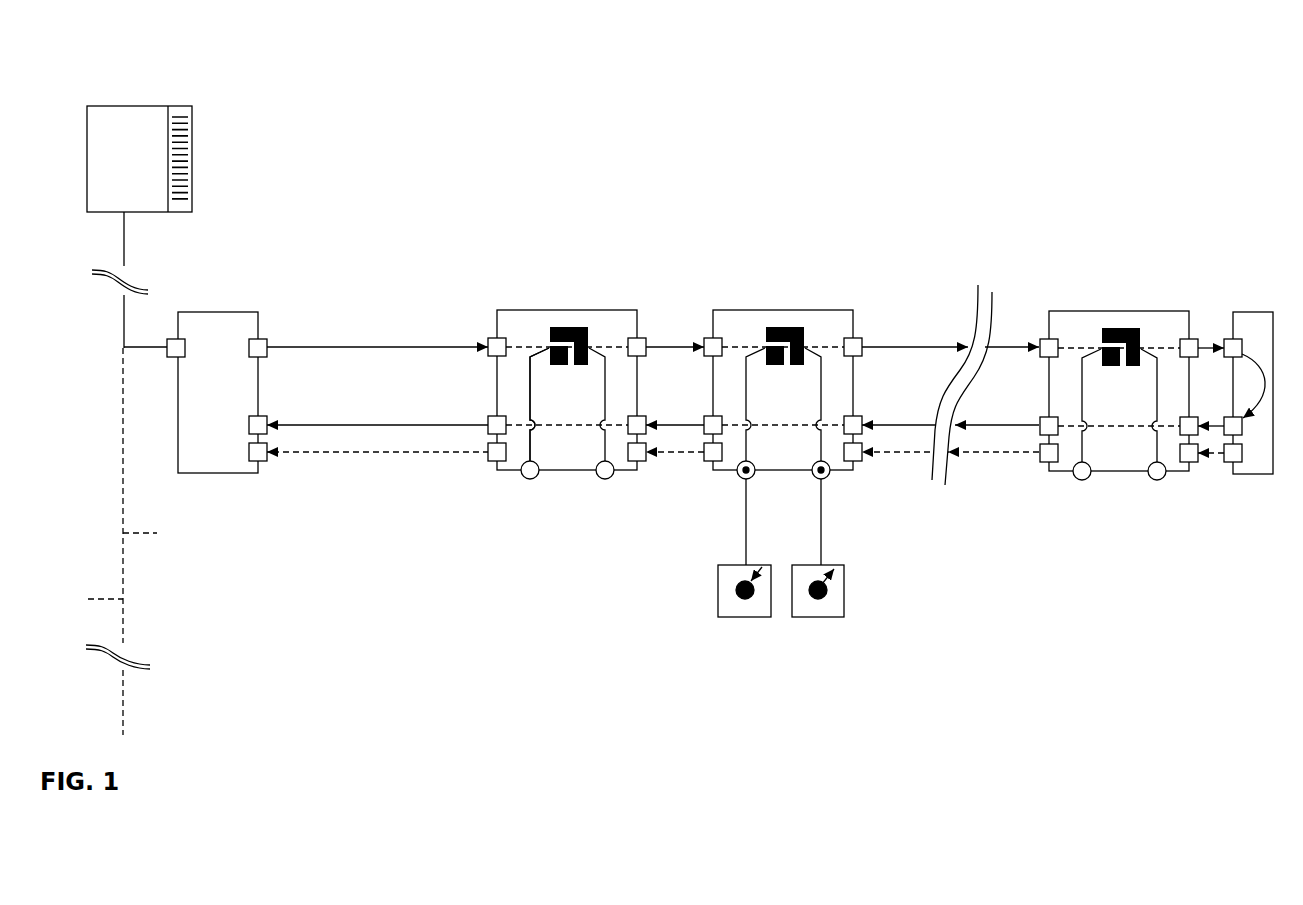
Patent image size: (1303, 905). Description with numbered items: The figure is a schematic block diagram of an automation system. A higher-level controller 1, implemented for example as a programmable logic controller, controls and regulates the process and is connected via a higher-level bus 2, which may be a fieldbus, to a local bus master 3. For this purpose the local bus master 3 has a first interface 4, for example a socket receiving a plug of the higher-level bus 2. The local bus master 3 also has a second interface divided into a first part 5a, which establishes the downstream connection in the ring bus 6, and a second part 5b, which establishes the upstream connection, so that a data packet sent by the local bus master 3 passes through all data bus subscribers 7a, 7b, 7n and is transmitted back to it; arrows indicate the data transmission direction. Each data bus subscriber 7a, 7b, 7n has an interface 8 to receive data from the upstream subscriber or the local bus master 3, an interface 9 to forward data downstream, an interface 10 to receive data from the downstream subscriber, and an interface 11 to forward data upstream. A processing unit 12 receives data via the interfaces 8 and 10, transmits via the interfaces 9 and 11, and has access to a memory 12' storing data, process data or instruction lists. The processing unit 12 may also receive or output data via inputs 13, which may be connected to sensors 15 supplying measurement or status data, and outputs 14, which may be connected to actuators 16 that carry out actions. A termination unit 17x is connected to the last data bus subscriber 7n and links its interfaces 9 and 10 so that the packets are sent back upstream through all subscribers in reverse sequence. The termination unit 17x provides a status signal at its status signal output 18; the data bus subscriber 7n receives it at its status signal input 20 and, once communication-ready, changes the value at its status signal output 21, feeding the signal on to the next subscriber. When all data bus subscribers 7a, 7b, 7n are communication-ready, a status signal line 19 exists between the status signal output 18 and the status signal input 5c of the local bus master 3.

The higher-level controller 1 is at (139, 159).
The higher-level bus 2 is at (120, 313).
The local bus master 3 is at (218, 392).
The first interface 4 is at (172, 356).
The first part of the second interface 5a is at (259, 338).
The second part of the second interface 5b is at (266, 422).
The status signal input 5c is at (266, 460).
The ring bus 6 is at (366, 346).
The data bus subscriber 7a is at (572, 359).
The data bus subscriber 7b is at (783, 394).
The data bus subscriber 7n is at (1119, 395).
The interface 8 is at (497, 338).
The interface 9 is at (638, 338).
The interface 10 is at (637, 418).
The interface 11 is at (498, 418).
The processing unit 12 is at (585, 270).
The memory 12' is at (561, 404).
The inputs 13 is at (532, 480).
The outputs 14 is at (607, 480).
The sensors 15 is at (752, 618).
The actuators 16 is at (822, 618).
The termination unit 17x is at (1250, 475).
The status signal output 18 is at (1232, 463).
The status signal line 19 is at (385, 457).
The status signal input 20 is at (637, 462).
The status signal output 21 is at (497, 462).